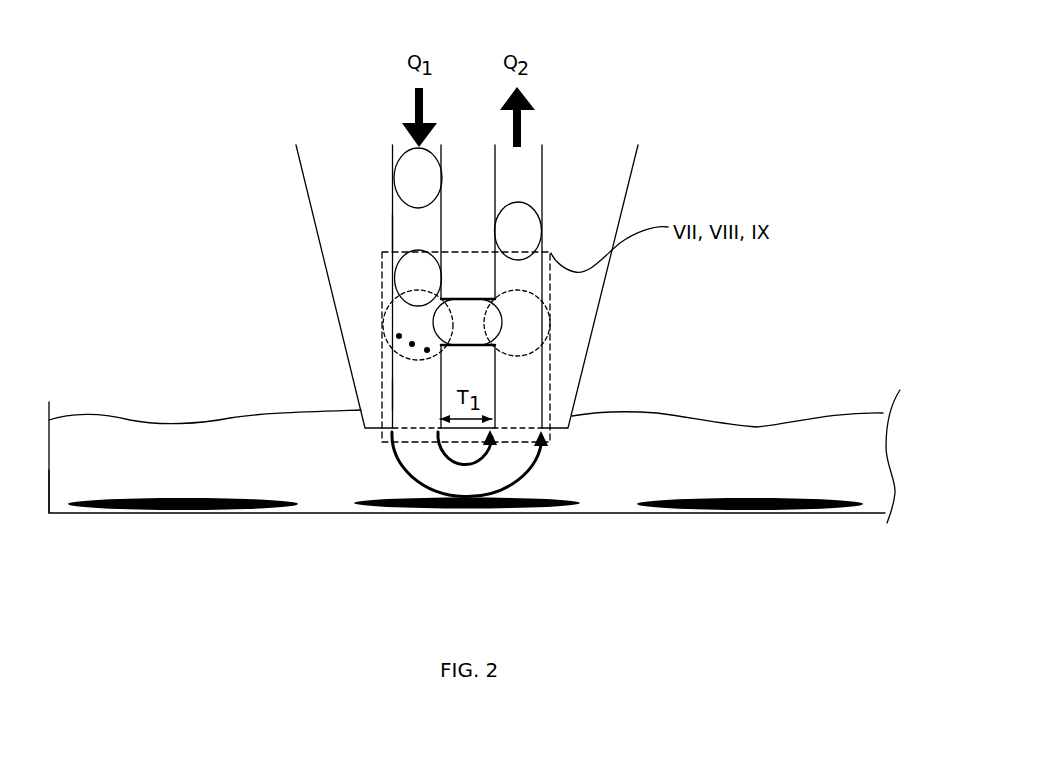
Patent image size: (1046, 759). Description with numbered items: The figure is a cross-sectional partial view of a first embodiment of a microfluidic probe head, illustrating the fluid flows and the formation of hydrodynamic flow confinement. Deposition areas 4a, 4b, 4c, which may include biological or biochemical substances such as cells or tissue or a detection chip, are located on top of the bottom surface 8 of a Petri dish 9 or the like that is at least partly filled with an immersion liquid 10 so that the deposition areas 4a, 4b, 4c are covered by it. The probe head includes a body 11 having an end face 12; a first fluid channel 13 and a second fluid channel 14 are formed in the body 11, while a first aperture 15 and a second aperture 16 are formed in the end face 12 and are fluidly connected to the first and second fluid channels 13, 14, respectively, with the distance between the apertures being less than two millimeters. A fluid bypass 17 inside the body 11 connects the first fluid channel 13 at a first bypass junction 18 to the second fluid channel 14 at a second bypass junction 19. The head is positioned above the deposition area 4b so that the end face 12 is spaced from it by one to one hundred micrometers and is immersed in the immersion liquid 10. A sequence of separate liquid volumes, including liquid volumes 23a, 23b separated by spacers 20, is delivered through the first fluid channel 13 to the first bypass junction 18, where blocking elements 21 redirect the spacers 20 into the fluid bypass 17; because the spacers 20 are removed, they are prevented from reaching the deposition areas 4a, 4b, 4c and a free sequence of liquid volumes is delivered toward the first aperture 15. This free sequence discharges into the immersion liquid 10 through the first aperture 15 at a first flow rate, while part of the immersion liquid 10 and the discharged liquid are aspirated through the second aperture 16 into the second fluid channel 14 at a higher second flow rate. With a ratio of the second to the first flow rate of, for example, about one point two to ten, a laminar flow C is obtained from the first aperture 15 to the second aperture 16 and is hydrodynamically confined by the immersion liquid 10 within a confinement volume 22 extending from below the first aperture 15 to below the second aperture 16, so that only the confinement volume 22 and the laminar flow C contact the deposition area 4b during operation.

The deposition area 4a is at (200, 510).
The deposition area 4b is at (487, 510).
The deposition area 4c is at (760, 508).
The bottom surface 8 is at (313, 499).
The Petri dish 9 is at (47, 482).
The immersion liquid 10 is at (811, 470).
The body 11 is at (635, 167).
The end face 12 is at (378, 442).
The first fluid channel 13 is at (392, 203).
The second fluid channel 14 is at (542, 197).
The first aperture 15 is at (417, 420).
The second aperture 16 is at (518, 420).
The fluid bypass 17 is at (473, 298).
The first bypass junction 18 is at (388, 308).
The second bypass junction 19 is at (522, 358).
The spacer 20 is at (468, 246).
The blocking element 21 is at (412, 347).
The confinement volume 22 is at (440, 468).
The liquid volume 23a is at (417, 390).
The liquid volume 23b is at (410, 230).
The laminar flow C is at (535, 463).